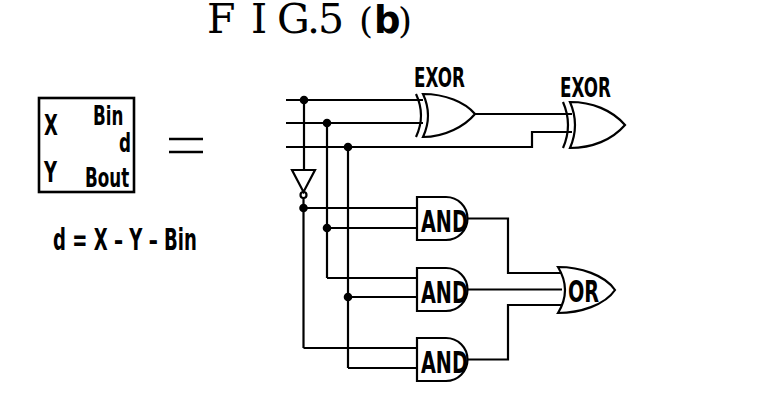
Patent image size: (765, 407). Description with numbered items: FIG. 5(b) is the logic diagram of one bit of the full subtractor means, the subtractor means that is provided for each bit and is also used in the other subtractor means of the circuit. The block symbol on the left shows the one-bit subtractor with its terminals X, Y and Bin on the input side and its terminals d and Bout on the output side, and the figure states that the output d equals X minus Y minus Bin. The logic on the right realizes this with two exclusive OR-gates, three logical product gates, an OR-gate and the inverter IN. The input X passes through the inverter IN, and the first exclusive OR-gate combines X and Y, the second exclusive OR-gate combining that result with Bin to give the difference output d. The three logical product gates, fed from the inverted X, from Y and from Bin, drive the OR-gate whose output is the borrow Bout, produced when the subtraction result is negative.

The minuend input X is at (344, 124).
The subtrahend input Y is at (344, 192).
The borrow input Bin is at (411, 250).
The inverter IN is at (292, 178).
The output d is at (625, 125).
The borrow output Bout is at (615, 290).